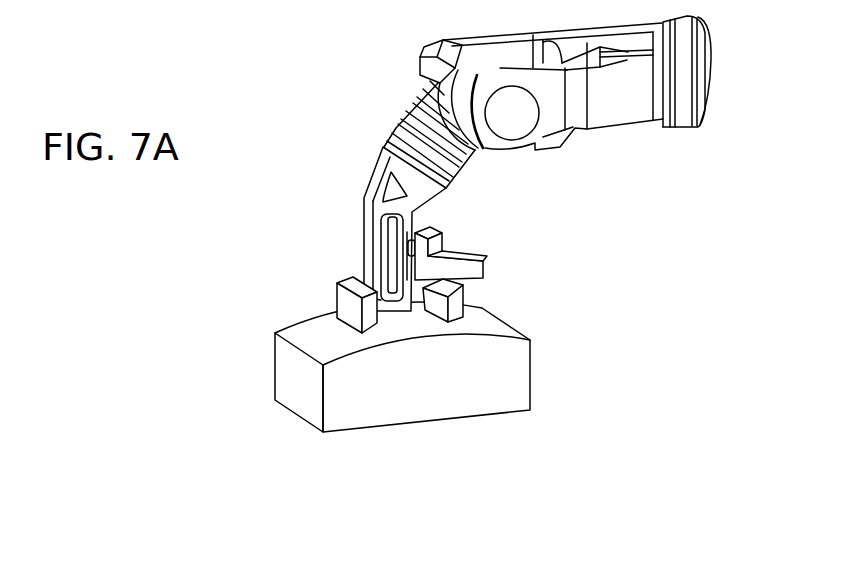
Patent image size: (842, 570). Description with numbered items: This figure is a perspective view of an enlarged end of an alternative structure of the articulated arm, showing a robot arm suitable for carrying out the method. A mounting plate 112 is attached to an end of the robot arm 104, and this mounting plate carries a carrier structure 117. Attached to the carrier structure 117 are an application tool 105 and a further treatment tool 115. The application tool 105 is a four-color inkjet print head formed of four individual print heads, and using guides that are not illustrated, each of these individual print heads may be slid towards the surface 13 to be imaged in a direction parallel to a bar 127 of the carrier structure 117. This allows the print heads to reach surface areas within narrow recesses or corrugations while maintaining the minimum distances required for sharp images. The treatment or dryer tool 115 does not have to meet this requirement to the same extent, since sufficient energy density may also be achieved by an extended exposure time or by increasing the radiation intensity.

The surface 13 is at (497, 327).
The robot arm 104 is at (680, 127).
The application tool 105 is at (352, 302).
The mounting plate 112 is at (450, 178).
The treatment tool 115 is at (470, 298).
The carrier structure 117 is at (378, 173).
The bar 127 is at (367, 236).